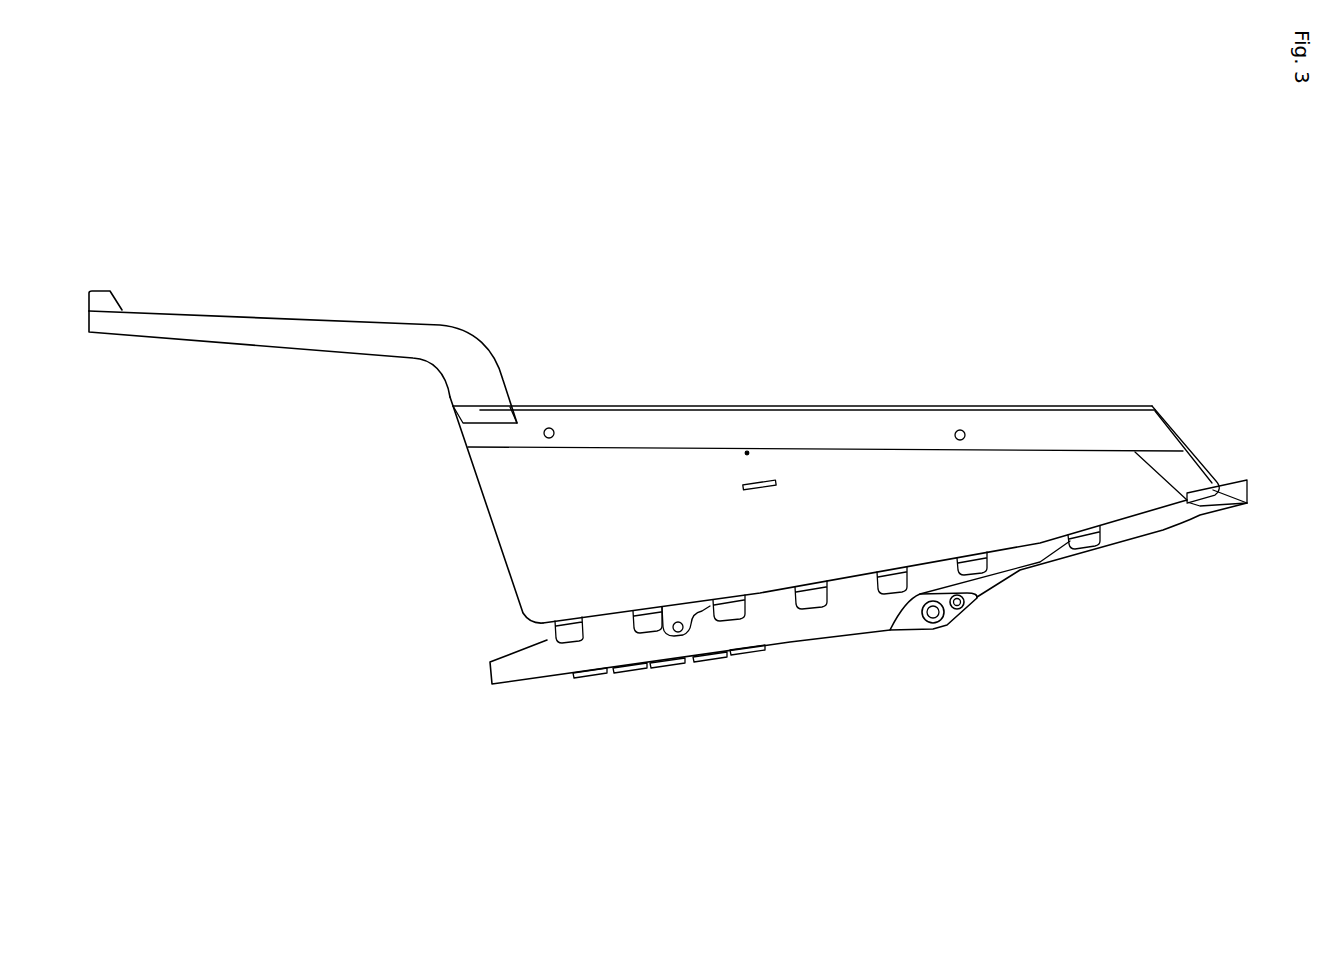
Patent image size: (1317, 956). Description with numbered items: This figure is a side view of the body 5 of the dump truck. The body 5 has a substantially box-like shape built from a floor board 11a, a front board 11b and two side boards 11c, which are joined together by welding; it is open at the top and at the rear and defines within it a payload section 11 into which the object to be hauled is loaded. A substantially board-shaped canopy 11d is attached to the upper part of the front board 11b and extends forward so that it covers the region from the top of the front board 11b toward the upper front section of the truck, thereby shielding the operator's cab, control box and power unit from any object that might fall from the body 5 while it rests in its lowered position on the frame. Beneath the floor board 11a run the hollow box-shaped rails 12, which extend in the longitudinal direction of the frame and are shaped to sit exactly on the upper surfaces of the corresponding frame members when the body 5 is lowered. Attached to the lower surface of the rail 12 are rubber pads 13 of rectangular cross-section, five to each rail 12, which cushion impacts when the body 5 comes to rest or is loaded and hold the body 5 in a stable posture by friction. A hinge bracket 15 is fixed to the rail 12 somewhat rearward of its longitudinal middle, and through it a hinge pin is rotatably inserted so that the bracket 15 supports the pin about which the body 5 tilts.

The body 5 is at (991, 383).
The payload section 11 is at (658, 512).
The floor board 11a is at (1028, 548).
The front board 11b is at (477, 476).
The side board 11c is at (763, 550).
The canopy 11d is at (320, 320).
The rail 12 is at (495, 672).
The rubber pad 13 is at (732, 653).
The hinge bracket 15 is at (977, 596).